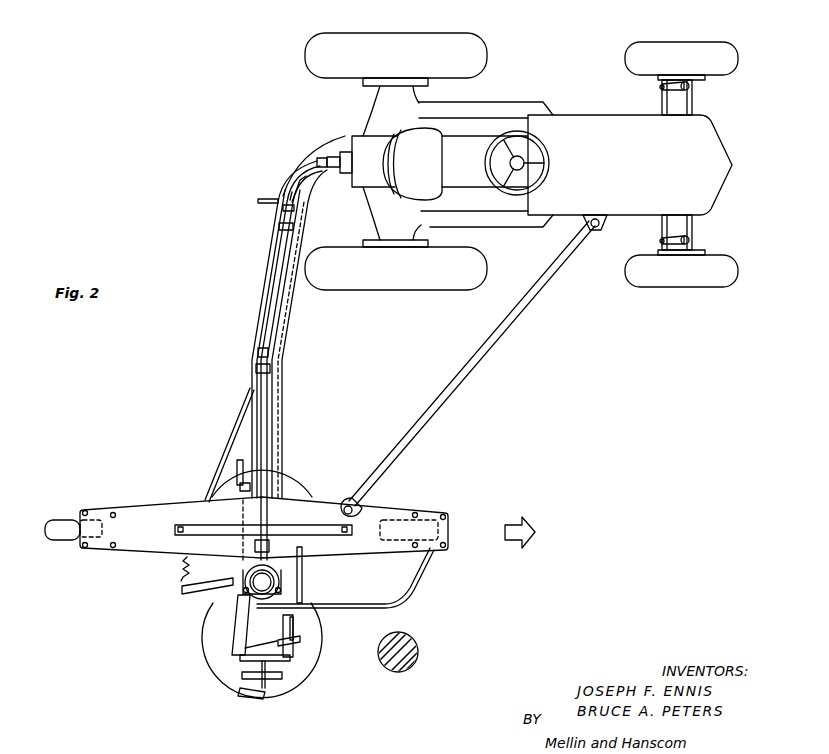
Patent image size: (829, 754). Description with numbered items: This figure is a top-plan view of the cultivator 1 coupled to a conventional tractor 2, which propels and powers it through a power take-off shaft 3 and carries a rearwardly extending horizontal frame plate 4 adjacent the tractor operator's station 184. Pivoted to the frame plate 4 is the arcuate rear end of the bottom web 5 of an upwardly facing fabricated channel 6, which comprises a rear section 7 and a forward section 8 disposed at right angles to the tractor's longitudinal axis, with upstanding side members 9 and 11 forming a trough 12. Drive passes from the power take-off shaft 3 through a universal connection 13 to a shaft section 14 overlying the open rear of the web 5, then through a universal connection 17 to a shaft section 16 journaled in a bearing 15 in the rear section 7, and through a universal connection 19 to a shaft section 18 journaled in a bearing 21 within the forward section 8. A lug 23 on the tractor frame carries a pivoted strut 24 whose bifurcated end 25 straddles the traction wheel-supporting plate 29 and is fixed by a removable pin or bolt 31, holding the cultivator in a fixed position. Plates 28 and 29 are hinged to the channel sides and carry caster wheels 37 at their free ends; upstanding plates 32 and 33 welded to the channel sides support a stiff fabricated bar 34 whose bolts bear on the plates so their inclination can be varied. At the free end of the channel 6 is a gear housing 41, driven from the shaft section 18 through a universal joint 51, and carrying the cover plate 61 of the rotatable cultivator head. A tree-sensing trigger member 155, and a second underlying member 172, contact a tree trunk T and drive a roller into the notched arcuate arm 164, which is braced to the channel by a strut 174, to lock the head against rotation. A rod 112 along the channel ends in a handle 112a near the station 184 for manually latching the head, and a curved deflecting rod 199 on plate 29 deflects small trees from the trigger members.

The cultivator 1 is at (168, 486).
The tractor 2 is at (565, 47).
The power take-off shaft 3 is at (341, 180).
The frame plate 4 is at (341, 147).
The bottom web 5 is at (299, 173).
The fabricated channel 6 is at (239, 342).
The rear section 7 is at (268, 276).
The forward section 8 is at (257, 443).
The side member 9 is at (262, 319).
The side member 11 is at (286, 285).
The trough 12 is at (272, 399).
The universal connection 13 is at (318, 157).
The shaft section 14 is at (297, 185).
The bearing 15 is at (294, 227).
The shaft section 16 is at (270, 293).
The universal connection 17 is at (296, 208).
The shaft section 18 is at (262, 423).
The universal connection 19 is at (268, 353).
The bearing 21 is at (256, 370).
The lug 23 is at (600, 222).
The strut 24 is at (490, 346).
The bifurcated end 25 is at (356, 495).
The traction wheel-supporting plate 28 is at (139, 548).
The traction wheel-supporting plate 29 is at (398, 505).
The removable pin or bolt 31 is at (346, 505).
The upstanding plate 32 is at (244, 523).
The upstanding plate 33 is at (284, 521).
The fabricated bar 34 is at (202, 527).
The caster wheel 37 is at (56, 532).
The gear housing 41 is at (283, 579).
The universal joint 51 is at (242, 549).
The cover plate 61 is at (255, 633).
The rod 112 is at (283, 378).
The handle 112a is at (266, 203).
The tree-sensing trigger member 155 is at (206, 631).
The arcuate arm 164 is at (184, 583).
The tree-sensing trigger member 172 is at (312, 646).
The strut 174 is at (227, 456).
The tractor operator's station 184 is at (472, 174).
The deflecting bar or rod 199 is at (420, 578).
The tree trunk T is at (418, 653).